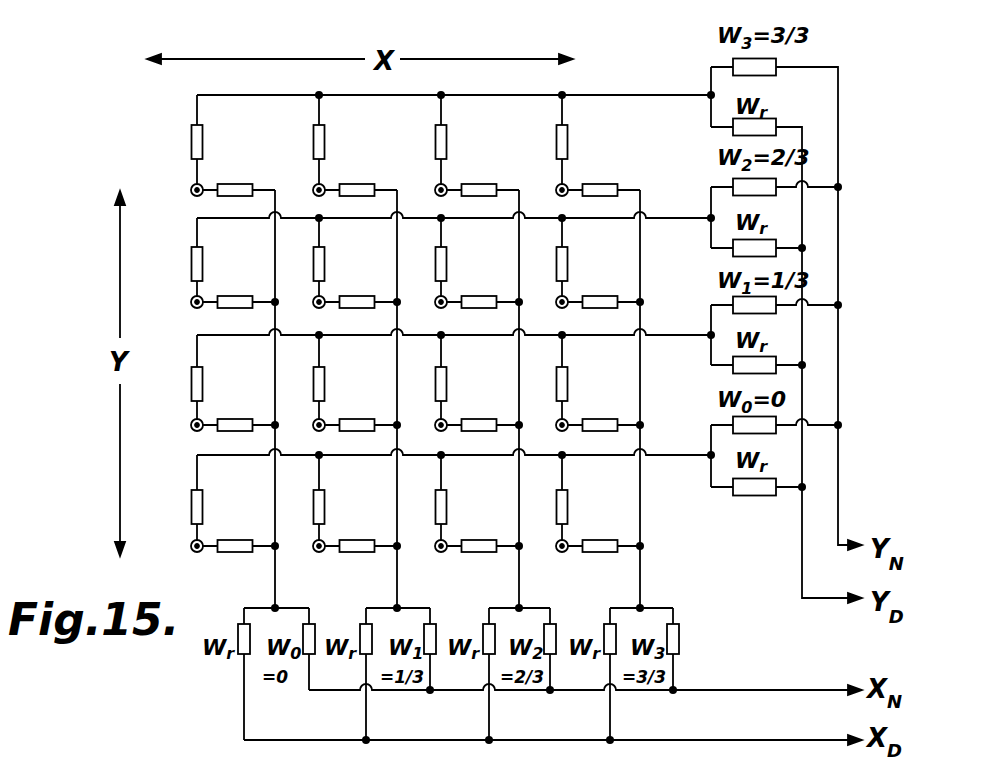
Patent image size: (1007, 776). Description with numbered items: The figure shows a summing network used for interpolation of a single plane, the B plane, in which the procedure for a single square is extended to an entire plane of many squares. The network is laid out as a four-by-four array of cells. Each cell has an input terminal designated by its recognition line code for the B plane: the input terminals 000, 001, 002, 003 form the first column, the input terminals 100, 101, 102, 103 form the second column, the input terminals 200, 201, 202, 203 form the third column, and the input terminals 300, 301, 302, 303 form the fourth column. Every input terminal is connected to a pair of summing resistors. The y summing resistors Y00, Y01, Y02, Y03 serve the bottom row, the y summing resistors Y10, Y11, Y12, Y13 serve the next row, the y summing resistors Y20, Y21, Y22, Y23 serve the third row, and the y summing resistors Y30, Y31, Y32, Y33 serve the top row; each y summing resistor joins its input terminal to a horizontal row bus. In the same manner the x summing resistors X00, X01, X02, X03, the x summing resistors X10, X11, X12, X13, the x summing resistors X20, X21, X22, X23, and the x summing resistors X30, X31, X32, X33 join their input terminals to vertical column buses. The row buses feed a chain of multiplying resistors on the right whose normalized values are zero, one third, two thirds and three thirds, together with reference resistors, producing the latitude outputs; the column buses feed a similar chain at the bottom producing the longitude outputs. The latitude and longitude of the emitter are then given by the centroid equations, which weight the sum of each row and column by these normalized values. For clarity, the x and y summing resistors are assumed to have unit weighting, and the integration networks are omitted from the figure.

The input terminal 000 is at (175, 555).
The input terminal 001 is at (175, 434).
The input terminal 002 is at (175, 311).
The input terminal 003 is at (175, 199).
The input terminal 100 is at (297, 555).
The input terminal 101 is at (297, 434).
The input terminal 102 is at (297, 311).
The input terminal 103 is at (297, 199).
The input terminal 200 is at (419, 555).
The input terminal 201 is at (419, 434).
The input terminal 202 is at (419, 311).
The input terminal 203 is at (419, 199).
The input terminal 300 is at (540, 555).
The input terminal 301 is at (540, 434).
The input terminal 302 is at (540, 311).
The input terminal 303 is at (540, 199).
The y summing resistor Y00 is at (175, 497).
The y summing resistor Y01 is at (297, 497).
The y summing resistor Y02 is at (419, 497).
The y summing resistor Y03 is at (540, 497).
The y summing resistor Y10 is at (175, 377).
The y summing resistor Y11 is at (297, 377).
The y summing resistor Y12 is at (419, 377).
The y summing resistor Y13 is at (540, 377).
The y summing resistor Y20 is at (175, 257).
The y summing resistor Y21 is at (297, 257).
The y summing resistor Y22 is at (419, 257).
The y summing resistor Y23 is at (540, 257).
The y summing resistor Y30 is at (175, 139).
The y summing resistor Y31 is at (297, 139).
The y summing resistor Y32 is at (419, 139).
The y summing resistor Y33 is at (540, 139).
The x summing resistor X00 is at (239, 531).
The x summing resistor X01 is at (361, 531).
The x summing resistor X02 is at (483, 531).
The x summing resistor X03 is at (604, 531).
The x summing resistor X10 is at (239, 410).
The x summing resistor X11 is at (361, 410).
The x summing resistor X12 is at (483, 410).
The x summing resistor X13 is at (604, 410).
The x summing resistor X20 is at (239, 287).
The x summing resistor X21 is at (361, 287).
The x summing resistor X22 is at (483, 287).
The x summing resistor X23 is at (604, 287).
The x summing resistor X30 is at (239, 175).
The x summing resistor X31 is at (361, 175).
The x summing resistor X32 is at (483, 175).
The x summing resistor X33 is at (604, 175).